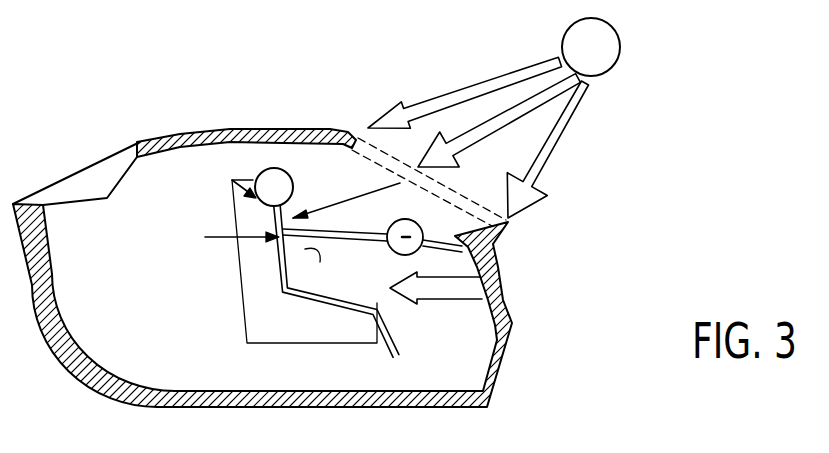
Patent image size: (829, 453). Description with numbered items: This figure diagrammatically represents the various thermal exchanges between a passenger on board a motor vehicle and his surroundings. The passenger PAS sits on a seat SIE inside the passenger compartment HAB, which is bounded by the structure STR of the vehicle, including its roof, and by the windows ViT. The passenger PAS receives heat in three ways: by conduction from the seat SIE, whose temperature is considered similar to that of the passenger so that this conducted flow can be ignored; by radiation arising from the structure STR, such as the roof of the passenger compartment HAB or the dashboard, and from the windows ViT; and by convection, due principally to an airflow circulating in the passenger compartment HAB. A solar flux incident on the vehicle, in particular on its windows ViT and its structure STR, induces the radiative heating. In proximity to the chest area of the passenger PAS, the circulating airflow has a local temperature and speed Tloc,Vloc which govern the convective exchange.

The structure of the vehicle STR is at (220, 130).
The passenger PAS is at (273, 168).
The passenger compartment HAB is at (195, 335).
The seat SIE is at (330, 323).
The windows ViT is at (480, 203).
The local temperature and speed of the airflow Tloc,Vloc is at (298, 248).